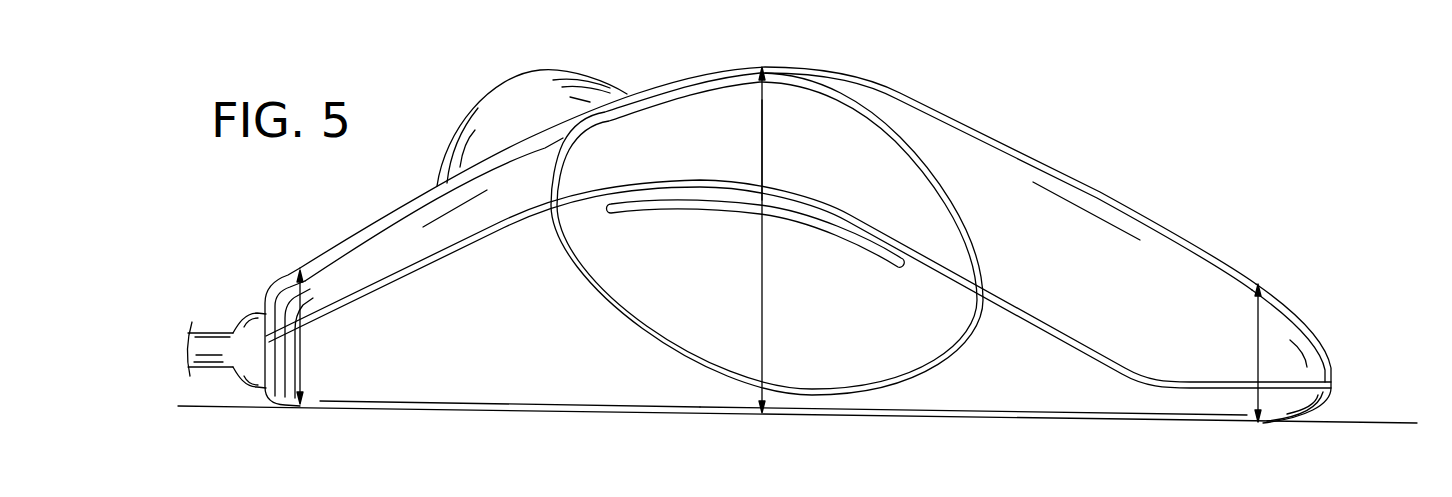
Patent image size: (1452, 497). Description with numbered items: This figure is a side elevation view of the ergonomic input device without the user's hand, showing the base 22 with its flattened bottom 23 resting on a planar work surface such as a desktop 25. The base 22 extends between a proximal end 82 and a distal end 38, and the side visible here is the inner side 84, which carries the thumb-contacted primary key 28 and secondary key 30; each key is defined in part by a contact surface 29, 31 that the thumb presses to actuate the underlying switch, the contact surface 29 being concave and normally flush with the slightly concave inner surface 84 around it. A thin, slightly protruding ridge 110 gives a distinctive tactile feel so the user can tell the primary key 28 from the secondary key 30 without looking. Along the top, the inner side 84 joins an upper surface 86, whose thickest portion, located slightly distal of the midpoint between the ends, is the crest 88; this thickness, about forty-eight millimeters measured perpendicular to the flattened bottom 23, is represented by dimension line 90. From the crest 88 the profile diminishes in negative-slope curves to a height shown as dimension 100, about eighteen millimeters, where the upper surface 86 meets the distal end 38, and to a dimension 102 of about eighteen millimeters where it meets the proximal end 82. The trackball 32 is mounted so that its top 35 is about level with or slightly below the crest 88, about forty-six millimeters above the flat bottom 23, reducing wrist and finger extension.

The base 22 is at (1060, 408).
The flattened bottom 23 is at (387, 410).
The desktop 25 is at (1383, 423).
The primary key 28 is at (897, 362).
The contact surface 29 is at (841, 322).
The secondary key 30 is at (863, 130).
The contact surface 31 is at (908, 194).
The trackball 32 is at (503, 108).
The top of the trackball 35 is at (557, 72).
The distal end 38 is at (263, 300).
The proximal end 82 is at (1337, 365).
The inner side 84 is at (474, 345).
The upper surface 86 is at (987, 131).
The crest 88 is at (762, 70).
The dimension line 90 is at (764, 147).
The dimension 100 is at (303, 350).
The dimension 102 is at (1258, 338).
The ridge 110 is at (650, 212).